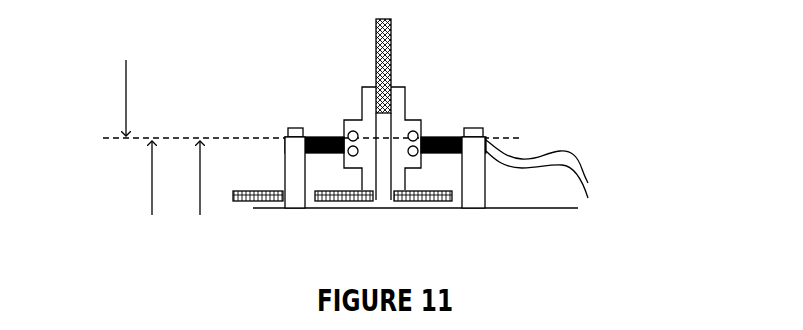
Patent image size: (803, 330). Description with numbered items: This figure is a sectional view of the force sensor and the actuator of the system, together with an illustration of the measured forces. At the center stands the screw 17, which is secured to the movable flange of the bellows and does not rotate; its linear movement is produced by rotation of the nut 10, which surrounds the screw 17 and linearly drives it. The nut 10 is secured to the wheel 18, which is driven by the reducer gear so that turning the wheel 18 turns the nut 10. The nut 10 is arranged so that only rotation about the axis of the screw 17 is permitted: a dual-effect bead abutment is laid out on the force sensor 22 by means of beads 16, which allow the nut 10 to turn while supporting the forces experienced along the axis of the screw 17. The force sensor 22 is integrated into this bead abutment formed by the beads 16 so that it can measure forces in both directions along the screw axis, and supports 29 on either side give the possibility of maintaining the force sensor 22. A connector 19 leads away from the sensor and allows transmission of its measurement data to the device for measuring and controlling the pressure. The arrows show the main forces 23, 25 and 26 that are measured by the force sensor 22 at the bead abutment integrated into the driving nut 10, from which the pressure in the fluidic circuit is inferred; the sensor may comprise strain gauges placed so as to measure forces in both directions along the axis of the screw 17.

The nut 10 is at (405, 90).
The beads 16 is at (418, 134).
The screw 17 is at (392, 52).
The wheel 18 is at (338, 208).
The connector 19 is at (575, 179).
The force sensor 22 is at (321, 137).
The force 23 is at (127, 62).
The force 25 is at (153, 198).
The force 26 is at (201, 198).
The supports 29 is at (291, 208).